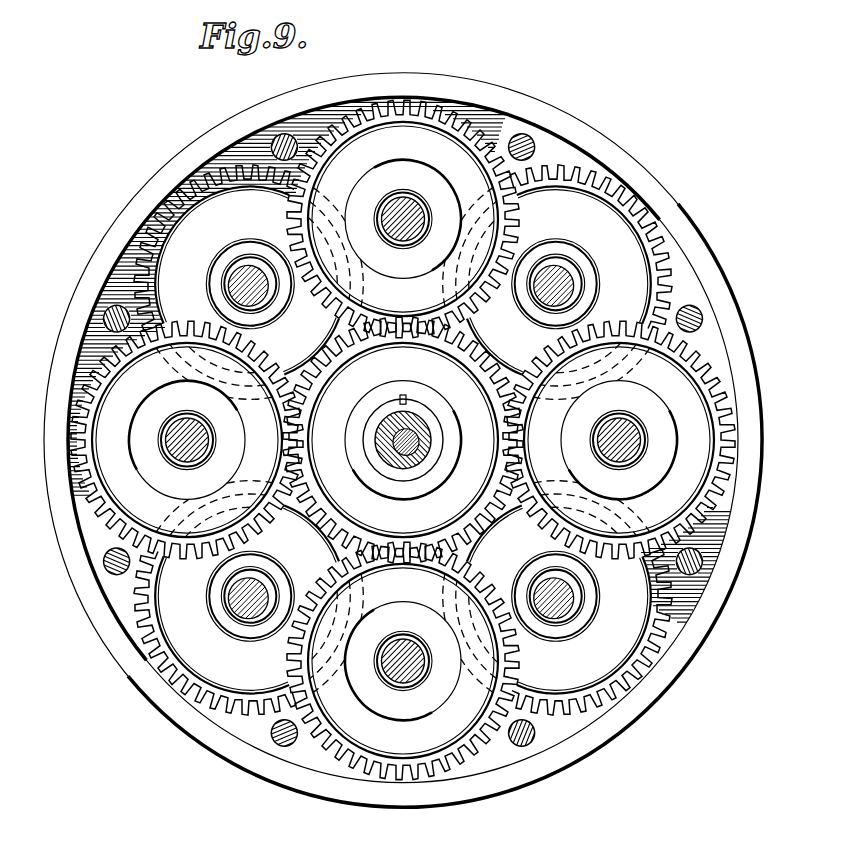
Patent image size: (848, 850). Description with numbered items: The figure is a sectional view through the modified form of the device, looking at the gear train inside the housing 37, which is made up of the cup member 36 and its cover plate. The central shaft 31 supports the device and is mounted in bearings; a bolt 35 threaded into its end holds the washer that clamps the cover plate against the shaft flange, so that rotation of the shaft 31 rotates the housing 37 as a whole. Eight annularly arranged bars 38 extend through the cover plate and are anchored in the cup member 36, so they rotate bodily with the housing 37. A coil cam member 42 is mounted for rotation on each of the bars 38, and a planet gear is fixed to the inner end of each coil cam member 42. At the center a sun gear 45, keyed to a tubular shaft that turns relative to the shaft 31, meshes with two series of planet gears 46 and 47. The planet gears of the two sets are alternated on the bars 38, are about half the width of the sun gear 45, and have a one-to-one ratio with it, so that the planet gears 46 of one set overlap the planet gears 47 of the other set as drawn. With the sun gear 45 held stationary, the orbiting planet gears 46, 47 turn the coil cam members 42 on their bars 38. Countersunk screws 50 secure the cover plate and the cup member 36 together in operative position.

The shaft 31 is at (403, 464).
The bolt 35 is at (377, 441).
The cup member 36 is at (403, 443).
The housing 37 is at (187, 313).
The bars 38 is at (409, 430).
The coil cam member 42 is at (413, 441).
The sun gear 45 is at (403, 440).
The planet gears 46 is at (401, 442).
The planet gears 47 is at (405, 448).
The countersunk screws 50 is at (416, 411).